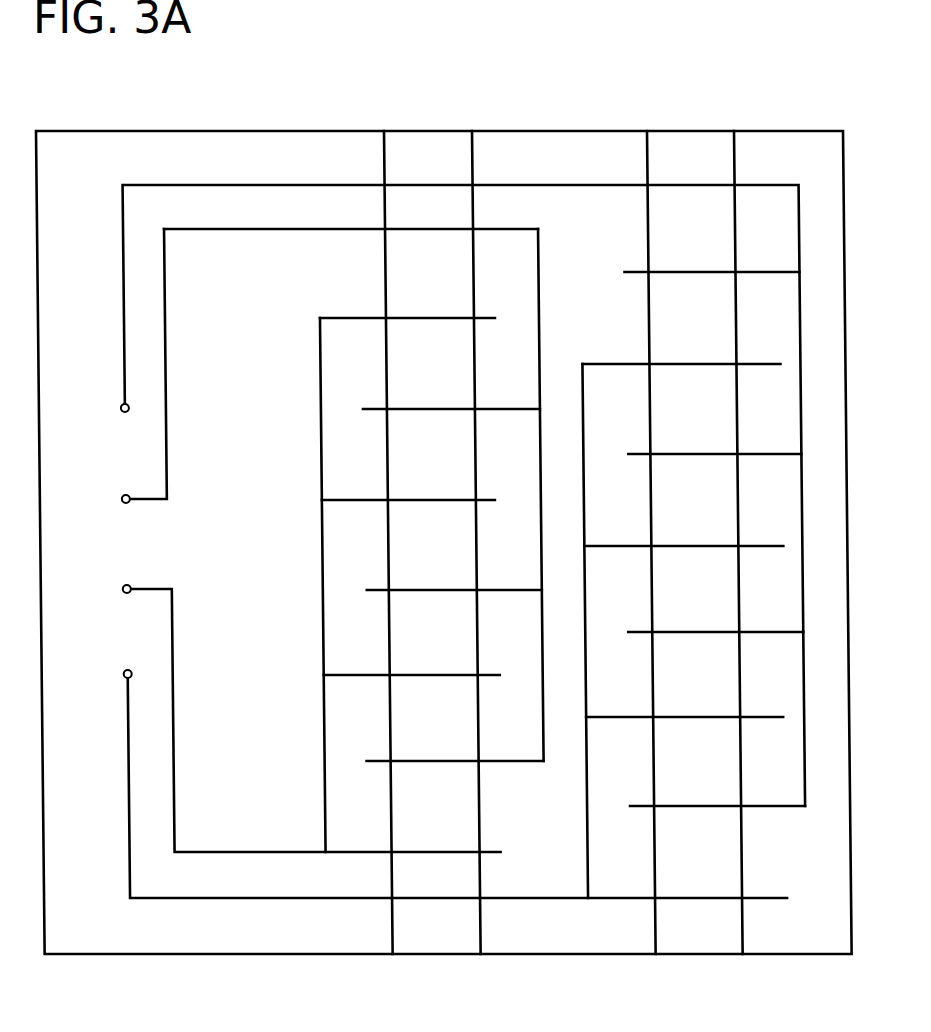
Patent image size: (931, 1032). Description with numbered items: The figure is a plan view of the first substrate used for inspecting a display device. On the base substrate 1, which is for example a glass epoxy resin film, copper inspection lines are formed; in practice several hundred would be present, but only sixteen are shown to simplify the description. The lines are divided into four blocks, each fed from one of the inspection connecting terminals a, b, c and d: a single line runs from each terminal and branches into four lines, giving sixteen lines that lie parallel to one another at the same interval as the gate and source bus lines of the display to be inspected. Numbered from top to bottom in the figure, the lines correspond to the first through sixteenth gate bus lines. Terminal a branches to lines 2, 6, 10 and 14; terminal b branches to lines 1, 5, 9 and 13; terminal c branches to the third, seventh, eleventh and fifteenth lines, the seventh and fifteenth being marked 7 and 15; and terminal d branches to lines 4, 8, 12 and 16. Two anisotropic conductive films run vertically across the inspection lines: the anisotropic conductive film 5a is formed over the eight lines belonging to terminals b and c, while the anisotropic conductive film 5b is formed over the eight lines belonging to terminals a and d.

The anisotropic conductive film 5a is at (423, 152).
The anisotropic conductive film 5b is at (677, 148).
The inspection connecting terminal a is at (107, 405).
The inspection connecting terminal b is at (107, 497).
The inspection connecting terminal c is at (108, 587).
The inspection connecting terminal d is at (109, 673).
The base substrate 1 is at (351, 210).
The conductor segment 2 is at (711, 252).
The inspection lines 4 is at (681, 342).
The conductor segment 5 is at (451, 389).
The conductor segment 6 is at (714, 433).
The conductor segment 7 is at (419, 479).
The conductor segment 8 is at (683, 526).
The conductor segment 9 is at (453, 570).
The conductor segment 10 is at (715, 611).
The second substrate 12 is at (684, 696).
The conductor segment 13 is at (454, 741).
The conductor segment 14 is at (717, 784).
The conductor segment 15 is at (431, 832).
The conductor segment 16 is at (687, 875).